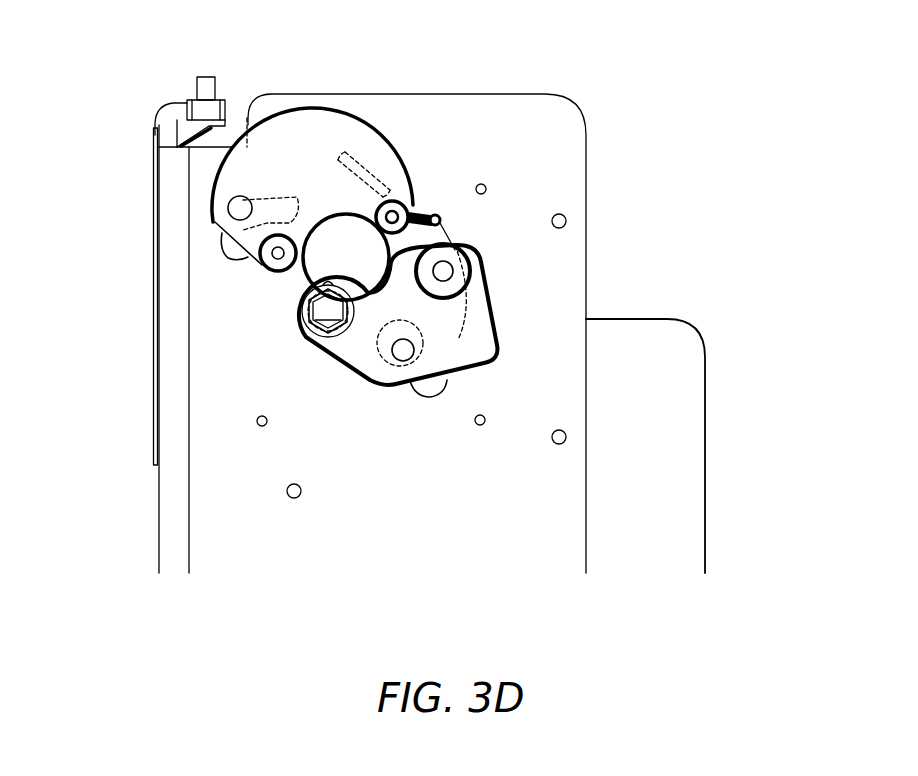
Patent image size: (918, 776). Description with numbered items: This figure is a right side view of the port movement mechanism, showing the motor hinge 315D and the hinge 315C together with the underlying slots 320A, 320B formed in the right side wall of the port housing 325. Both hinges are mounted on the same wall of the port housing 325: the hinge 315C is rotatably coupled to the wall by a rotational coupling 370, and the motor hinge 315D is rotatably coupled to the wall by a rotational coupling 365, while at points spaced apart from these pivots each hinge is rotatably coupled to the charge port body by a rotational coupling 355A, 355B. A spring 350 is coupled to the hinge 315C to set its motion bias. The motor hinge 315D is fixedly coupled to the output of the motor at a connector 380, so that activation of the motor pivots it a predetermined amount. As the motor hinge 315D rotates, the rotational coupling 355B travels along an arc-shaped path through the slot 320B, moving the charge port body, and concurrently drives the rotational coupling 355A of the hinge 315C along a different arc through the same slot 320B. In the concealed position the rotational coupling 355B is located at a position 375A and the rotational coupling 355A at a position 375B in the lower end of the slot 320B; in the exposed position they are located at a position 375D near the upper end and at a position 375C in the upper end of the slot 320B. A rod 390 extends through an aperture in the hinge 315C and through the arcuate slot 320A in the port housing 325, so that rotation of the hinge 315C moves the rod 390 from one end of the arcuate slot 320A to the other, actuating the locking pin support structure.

The hinge 315C is at (400, 143).
The motor hinge 315D is at (485, 320).
The arcuate slot 320A is at (220, 243).
The slot 320B is at (500, 346).
The port housing 325 is at (527, 505).
The spring 350 is at (441, 221).
The rotational coupling 355A is at (408, 207).
The rotational coupling 355B is at (448, 272).
The rotational coupling 365 is at (298, 313).
The rotational coupling 370 is at (260, 260).
The position 375A is at (443, 400).
The position 375B is at (373, 338).
The position 375C is at (336, 148).
The position 375D is at (413, 180).
The connector 380 is at (312, 325).
The rod 390 is at (230, 203).